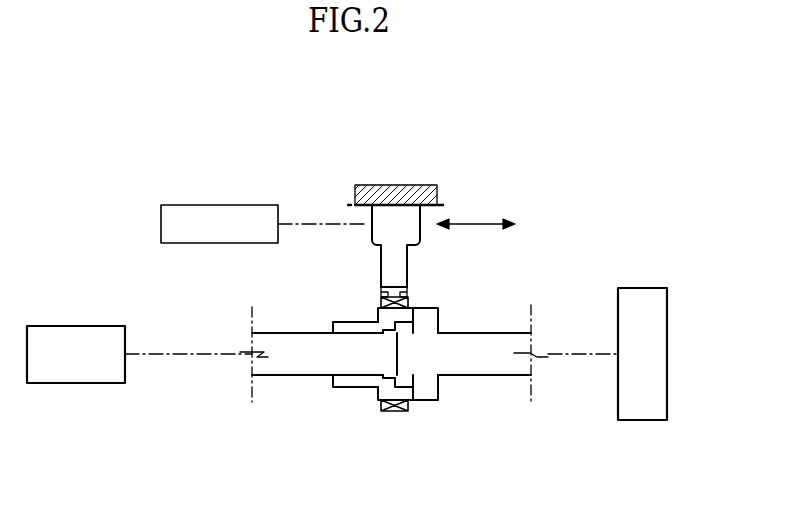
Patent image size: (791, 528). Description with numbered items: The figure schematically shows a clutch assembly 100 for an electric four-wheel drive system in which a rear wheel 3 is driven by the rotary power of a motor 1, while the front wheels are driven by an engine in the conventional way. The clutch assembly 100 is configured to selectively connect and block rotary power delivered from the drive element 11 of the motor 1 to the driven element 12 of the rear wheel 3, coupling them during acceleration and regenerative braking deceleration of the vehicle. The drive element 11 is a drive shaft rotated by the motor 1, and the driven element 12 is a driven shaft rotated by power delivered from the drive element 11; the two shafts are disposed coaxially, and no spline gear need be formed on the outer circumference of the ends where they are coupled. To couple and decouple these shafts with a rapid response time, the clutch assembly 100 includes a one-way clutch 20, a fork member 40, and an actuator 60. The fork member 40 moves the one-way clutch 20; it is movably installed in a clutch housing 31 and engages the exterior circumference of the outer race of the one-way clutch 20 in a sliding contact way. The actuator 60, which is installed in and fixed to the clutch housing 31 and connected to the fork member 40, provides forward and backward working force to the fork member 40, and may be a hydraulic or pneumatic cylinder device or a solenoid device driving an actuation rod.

The motor 1 is at (77, 384).
The rear wheel 3 is at (643, 421).
The drive element 11 is at (293, 376).
The driven element 12 is at (485, 376).
The one-way clutch 20 is at (410, 304).
The clutch housing 31 is at (417, 196).
The fork member 40 is at (381, 263).
The actuator 60 is at (161, 224).
The clutch assembly 100 is at (382, 118).